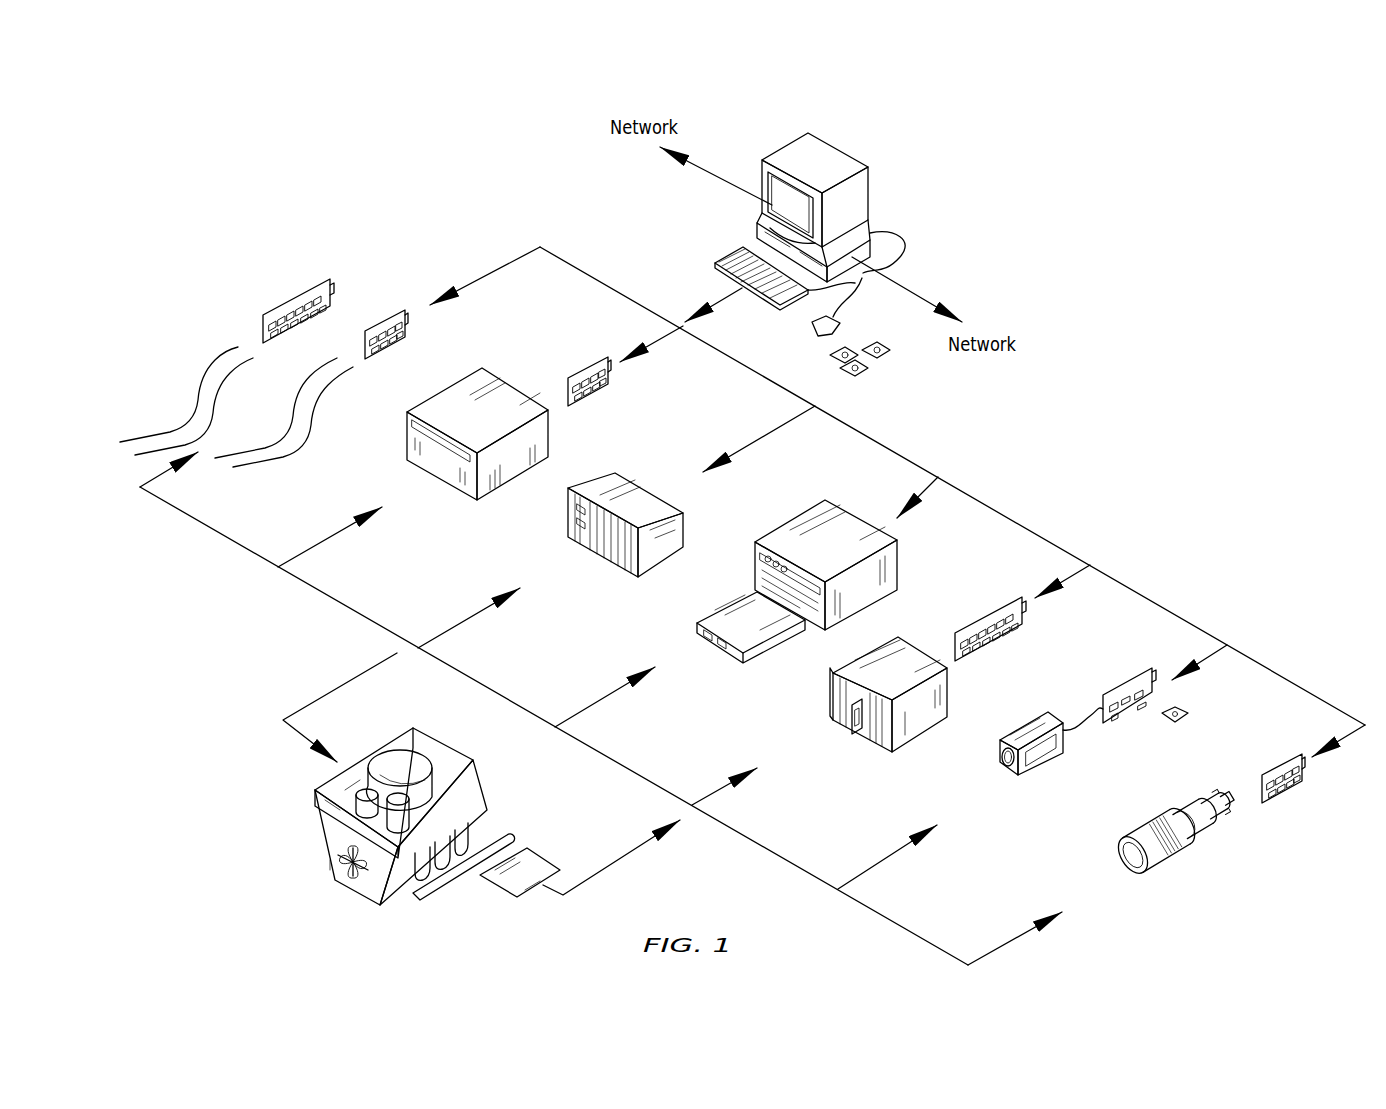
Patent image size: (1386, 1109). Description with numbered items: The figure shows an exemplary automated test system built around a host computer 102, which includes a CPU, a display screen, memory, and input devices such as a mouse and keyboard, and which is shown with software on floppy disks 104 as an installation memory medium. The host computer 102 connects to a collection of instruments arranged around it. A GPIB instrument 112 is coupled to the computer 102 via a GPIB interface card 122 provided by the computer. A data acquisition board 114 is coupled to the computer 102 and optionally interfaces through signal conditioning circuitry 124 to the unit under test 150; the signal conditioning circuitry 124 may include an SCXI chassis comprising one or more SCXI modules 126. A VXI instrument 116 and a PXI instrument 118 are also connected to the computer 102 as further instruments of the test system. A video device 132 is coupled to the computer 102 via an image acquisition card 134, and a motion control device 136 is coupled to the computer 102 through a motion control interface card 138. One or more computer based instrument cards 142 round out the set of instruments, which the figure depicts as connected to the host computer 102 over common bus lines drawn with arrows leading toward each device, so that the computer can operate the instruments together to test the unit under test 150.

The host computer 102 is at (833, 157).
The floppy disks 104 is at (860, 367).
The GPIB instrument 112 is at (448, 405).
The data acquisition board 114 is at (1017, 598).
The VXI instrument 116 is at (807, 530).
The PXI instrument 118 is at (607, 482).
The GPIB interface card 122 is at (587, 365).
The signal conditioning circuitry 124 is at (856, 730).
The SCXI modules 126 is at (862, 722).
The video device 132 is at (1045, 753).
The image acquisition card 134 is at (1125, 688).
The motion control device 136 is at (1163, 857).
The motion control interface card 138 is at (1288, 790).
The computer based instrument cards 142 is at (287, 300).
The unit under test 150 is at (330, 830).